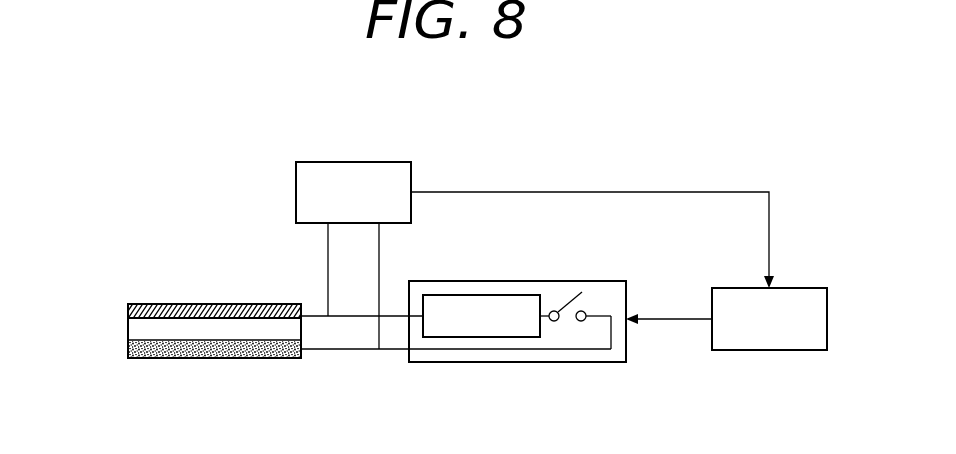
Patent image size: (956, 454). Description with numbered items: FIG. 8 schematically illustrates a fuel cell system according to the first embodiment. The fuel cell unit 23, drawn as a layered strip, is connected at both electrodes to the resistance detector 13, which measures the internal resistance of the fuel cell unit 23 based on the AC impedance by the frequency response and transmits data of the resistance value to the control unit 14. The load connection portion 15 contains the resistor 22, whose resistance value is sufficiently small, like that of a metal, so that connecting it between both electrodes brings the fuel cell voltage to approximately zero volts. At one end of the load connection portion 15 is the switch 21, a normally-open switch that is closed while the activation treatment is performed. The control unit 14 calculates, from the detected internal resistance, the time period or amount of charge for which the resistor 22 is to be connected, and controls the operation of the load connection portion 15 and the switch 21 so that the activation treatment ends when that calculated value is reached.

The resistance detector 13 is at (352, 168).
The control unit 14 is at (802, 290).
The load connection portion 15 is at (615, 292).
The switch 21 is at (566, 293).
The resistor 22 is at (481, 316).
The fuel cell unit 23 is at (205, 310).